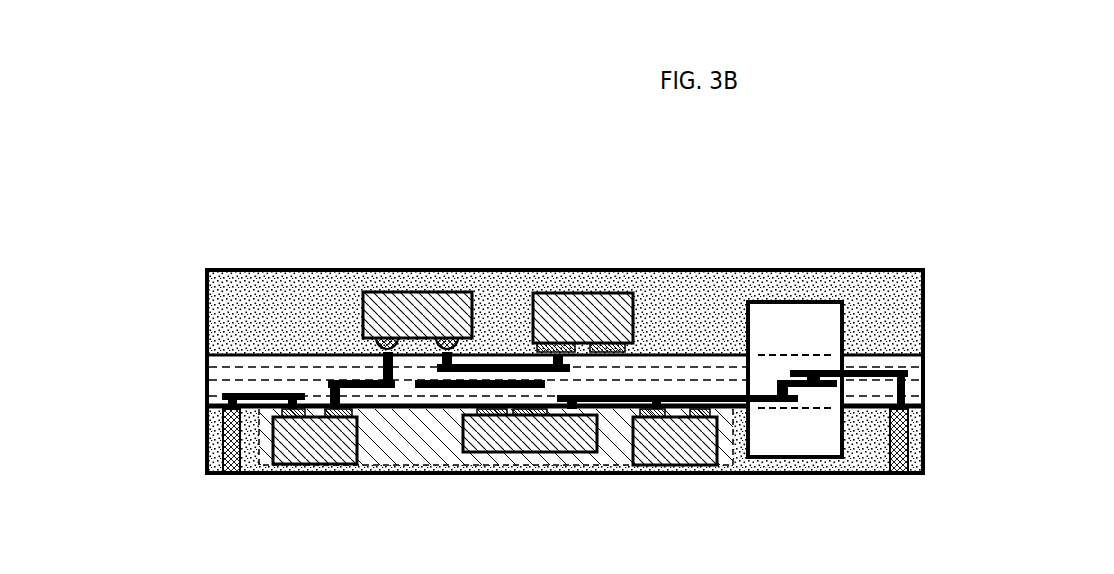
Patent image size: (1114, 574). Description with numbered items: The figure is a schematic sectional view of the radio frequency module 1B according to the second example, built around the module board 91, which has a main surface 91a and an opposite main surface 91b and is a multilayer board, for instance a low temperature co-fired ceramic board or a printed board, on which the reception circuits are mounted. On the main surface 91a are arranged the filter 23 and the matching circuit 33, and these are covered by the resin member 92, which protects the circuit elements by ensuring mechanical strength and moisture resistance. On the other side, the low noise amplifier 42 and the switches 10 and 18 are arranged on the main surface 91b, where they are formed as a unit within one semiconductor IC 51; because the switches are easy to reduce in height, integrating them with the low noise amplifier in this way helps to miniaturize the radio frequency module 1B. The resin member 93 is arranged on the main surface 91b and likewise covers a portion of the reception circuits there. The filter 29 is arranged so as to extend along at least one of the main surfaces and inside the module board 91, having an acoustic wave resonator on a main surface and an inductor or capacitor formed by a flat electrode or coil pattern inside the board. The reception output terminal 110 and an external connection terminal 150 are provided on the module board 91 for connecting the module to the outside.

The radio frequency module 1B is at (978, 236).
The switch 10 is at (316, 447).
The switch 18 is at (668, 447).
The filter 23 is at (436, 292).
The filter 29 is at (803, 302).
The matching circuit 33 is at (603, 295).
The low noise amplifier 42 is at (535, 440).
The semiconductor IC 51 is at (412, 437).
The module board 91 is at (914, 373).
The main surface 91a is at (909, 349).
The main surface 91b is at (916, 417).
The resin member 92 is at (912, 306).
The resin member 93 is at (913, 450).
The reception output terminal 110 is at (898, 467).
The external connection terminal 150 is at (231, 467).